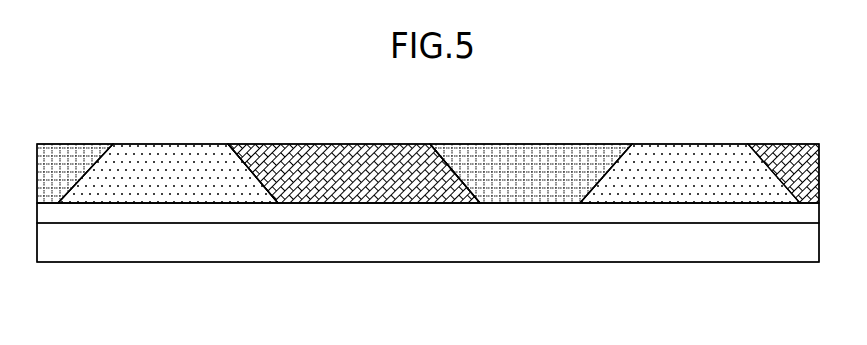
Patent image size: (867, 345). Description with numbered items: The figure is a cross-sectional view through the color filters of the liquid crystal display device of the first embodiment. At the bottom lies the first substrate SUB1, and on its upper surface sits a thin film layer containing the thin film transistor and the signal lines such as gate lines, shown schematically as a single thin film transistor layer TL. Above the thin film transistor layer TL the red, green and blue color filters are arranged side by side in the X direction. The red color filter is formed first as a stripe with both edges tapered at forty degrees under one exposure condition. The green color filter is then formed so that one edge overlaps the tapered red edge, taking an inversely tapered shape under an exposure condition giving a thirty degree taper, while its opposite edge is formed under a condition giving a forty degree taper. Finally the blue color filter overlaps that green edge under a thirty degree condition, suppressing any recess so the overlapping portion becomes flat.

The thin film transistor layer TL is at (428, 266).
The first substrate SUB1 is at (428, 276).